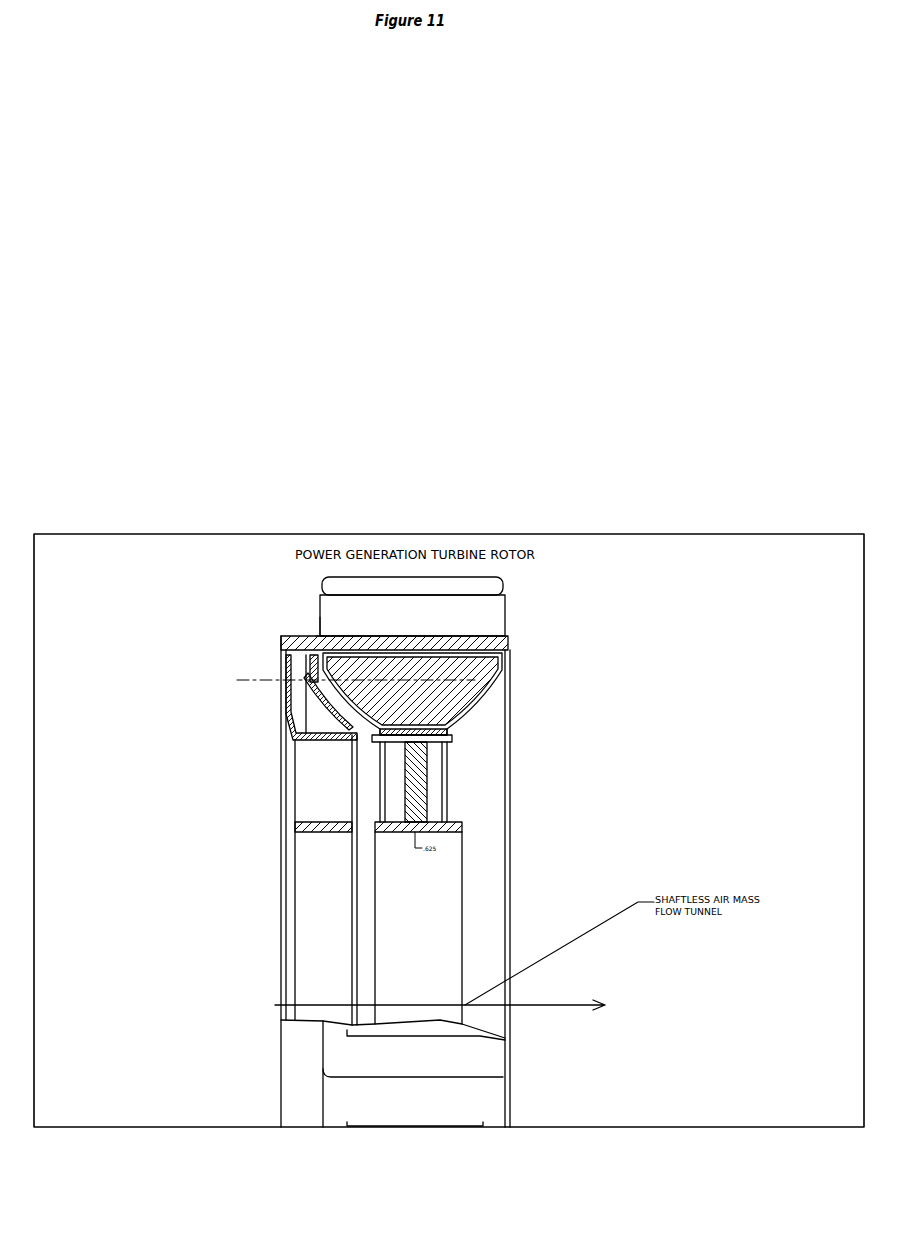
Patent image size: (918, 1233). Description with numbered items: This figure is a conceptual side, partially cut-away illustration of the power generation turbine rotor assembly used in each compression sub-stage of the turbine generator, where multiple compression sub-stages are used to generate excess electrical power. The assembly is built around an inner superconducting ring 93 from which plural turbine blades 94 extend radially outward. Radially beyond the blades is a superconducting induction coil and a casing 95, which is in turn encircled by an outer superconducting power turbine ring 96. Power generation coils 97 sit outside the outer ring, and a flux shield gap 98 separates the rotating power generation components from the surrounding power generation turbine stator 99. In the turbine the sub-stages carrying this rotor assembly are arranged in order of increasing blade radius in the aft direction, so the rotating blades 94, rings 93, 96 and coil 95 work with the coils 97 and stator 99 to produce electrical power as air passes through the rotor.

The inner superconducting ring 93 is at (462, 825).
The turbine blades 94 is at (427, 770).
The superconducting induction coil and casing 95 is at (463, 704).
The outer superconducting power turbine ring 96 is at (512, 646).
The power generation coils 97 is at (507, 603).
The flux shield gap 98 is at (320, 633).
The power generation turbine stator 99 is at (283, 650).